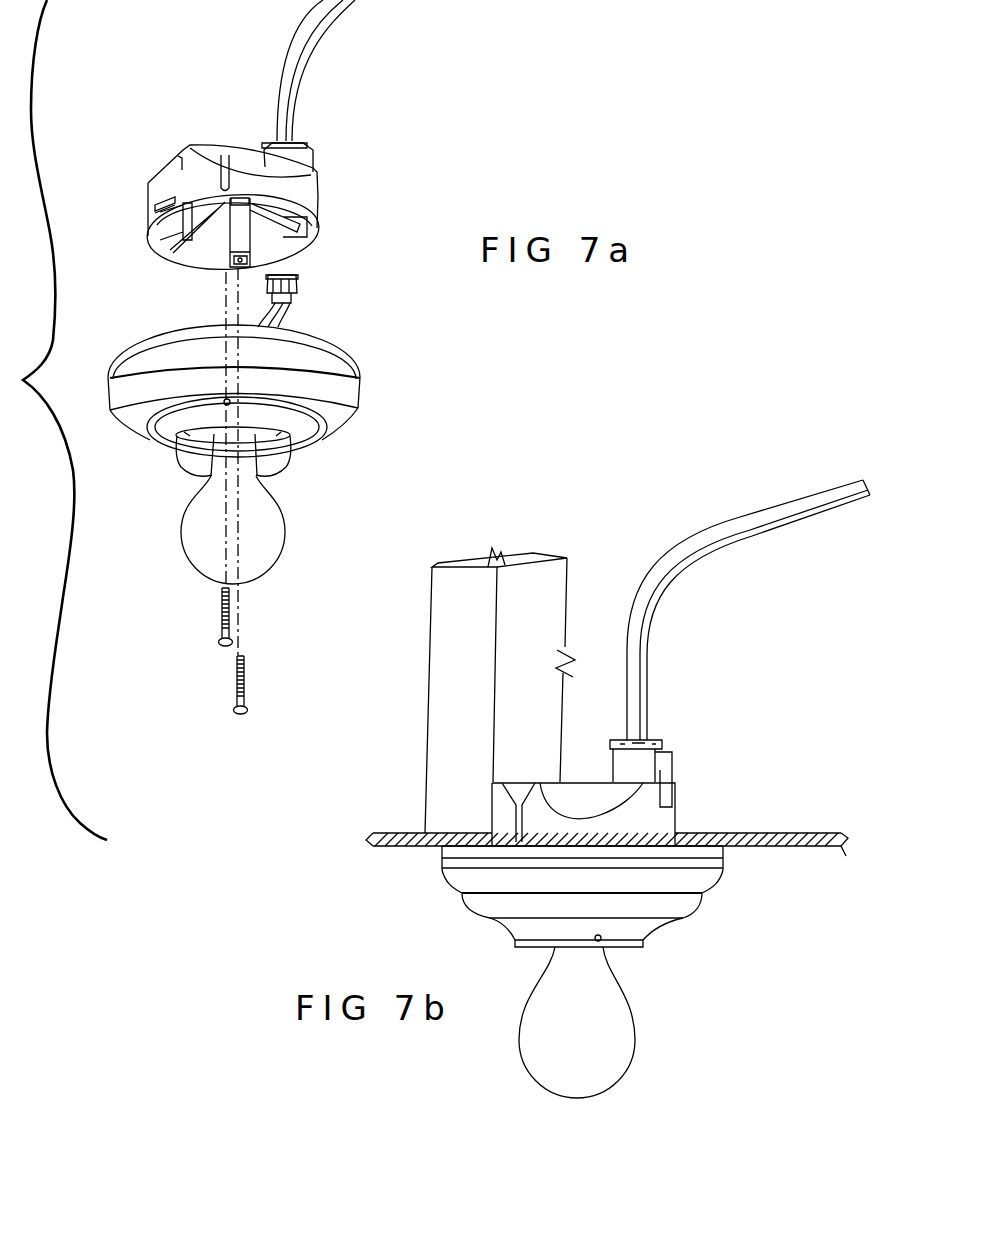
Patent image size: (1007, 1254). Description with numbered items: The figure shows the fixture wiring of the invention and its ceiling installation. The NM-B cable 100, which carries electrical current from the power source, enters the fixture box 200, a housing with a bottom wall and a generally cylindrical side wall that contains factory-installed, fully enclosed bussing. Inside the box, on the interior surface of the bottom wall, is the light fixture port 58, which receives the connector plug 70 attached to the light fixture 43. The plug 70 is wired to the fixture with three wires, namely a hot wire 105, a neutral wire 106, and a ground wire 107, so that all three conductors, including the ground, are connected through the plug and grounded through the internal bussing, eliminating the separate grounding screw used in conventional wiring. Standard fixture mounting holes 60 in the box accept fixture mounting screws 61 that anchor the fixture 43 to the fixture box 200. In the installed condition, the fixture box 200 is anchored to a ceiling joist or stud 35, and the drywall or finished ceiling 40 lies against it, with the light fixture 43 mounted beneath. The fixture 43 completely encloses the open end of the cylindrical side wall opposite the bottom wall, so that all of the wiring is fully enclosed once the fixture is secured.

In FIG. 7b, the ceiling joist or stud 35 is at (543, 580).
In FIG. 7b, the drywall or finished ceiling 40 is at (393, 848).
In FIG. 7a, the light fixture 43 is at (320, 407).
In FIG. 7b, the light fixture 43 is at (678, 907).
In FIG. 7a, the light fixture port 58 is at (290, 232).
In FIG. 7a, the fixture mounting holes 60 is at (253, 248).
In FIG. 7a, the fixture mounting screws 61 is at (230, 610).
In FIG. 7a, the connector plug 70 is at (297, 287).
In FIG. 7a, the NM-B cable 100 is at (428, 0).
In FIG. 7b, the NM-B cable 100 is at (807, 513).
In FIG. 7a, the hot wire 105 is at (287, 308).
In FIG. 7a, the neutral wire 106 is at (260, 310).
In FIG. 7a, the ground wire 107 is at (287, 323).
In FIG. 7a, the fixture box 200 is at (307, 187).
In FIG. 7b, the fixture box 200 is at (643, 818).